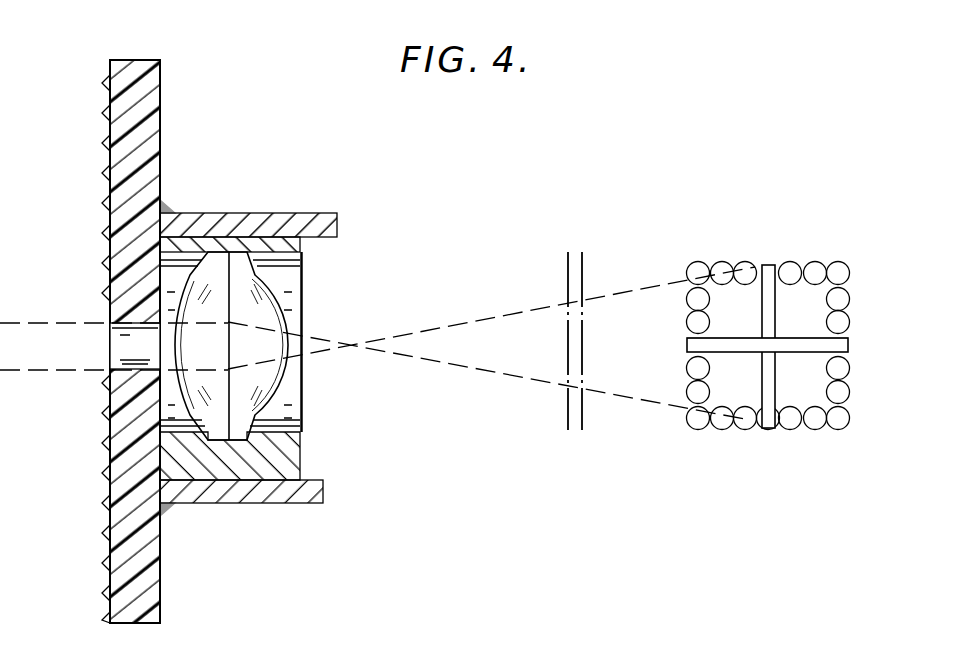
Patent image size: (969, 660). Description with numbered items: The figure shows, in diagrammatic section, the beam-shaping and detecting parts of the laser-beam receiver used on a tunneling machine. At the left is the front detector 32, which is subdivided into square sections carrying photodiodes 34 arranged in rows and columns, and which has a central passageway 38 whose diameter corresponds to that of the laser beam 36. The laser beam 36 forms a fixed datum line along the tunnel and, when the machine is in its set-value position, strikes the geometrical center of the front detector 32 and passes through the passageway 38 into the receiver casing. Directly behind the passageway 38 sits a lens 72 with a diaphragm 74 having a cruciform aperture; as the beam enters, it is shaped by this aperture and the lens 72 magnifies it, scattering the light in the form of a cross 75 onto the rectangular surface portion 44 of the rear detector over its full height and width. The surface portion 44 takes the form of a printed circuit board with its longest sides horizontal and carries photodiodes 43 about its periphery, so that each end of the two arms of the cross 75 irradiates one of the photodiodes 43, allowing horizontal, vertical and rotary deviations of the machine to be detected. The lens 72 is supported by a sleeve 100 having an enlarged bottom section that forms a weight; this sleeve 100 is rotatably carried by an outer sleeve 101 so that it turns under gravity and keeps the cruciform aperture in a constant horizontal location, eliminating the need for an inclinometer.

The front detector 32 is at (108, 128).
The photodiodes 34 is at (108, 205).
The laser beam 36 is at (57, 359).
The passageway 38 is at (135, 346).
The sleeve 100 is at (300, 251).
The outer sleeve 101 is at (323, 493).
The lens 72 is at (273, 308).
The diaphragm 74 is at (229, 503).
The photodiodes 43 is at (848, 276).
The rectangular surface portion 44 is at (748, 384).
The cross 75 is at (776, 352).